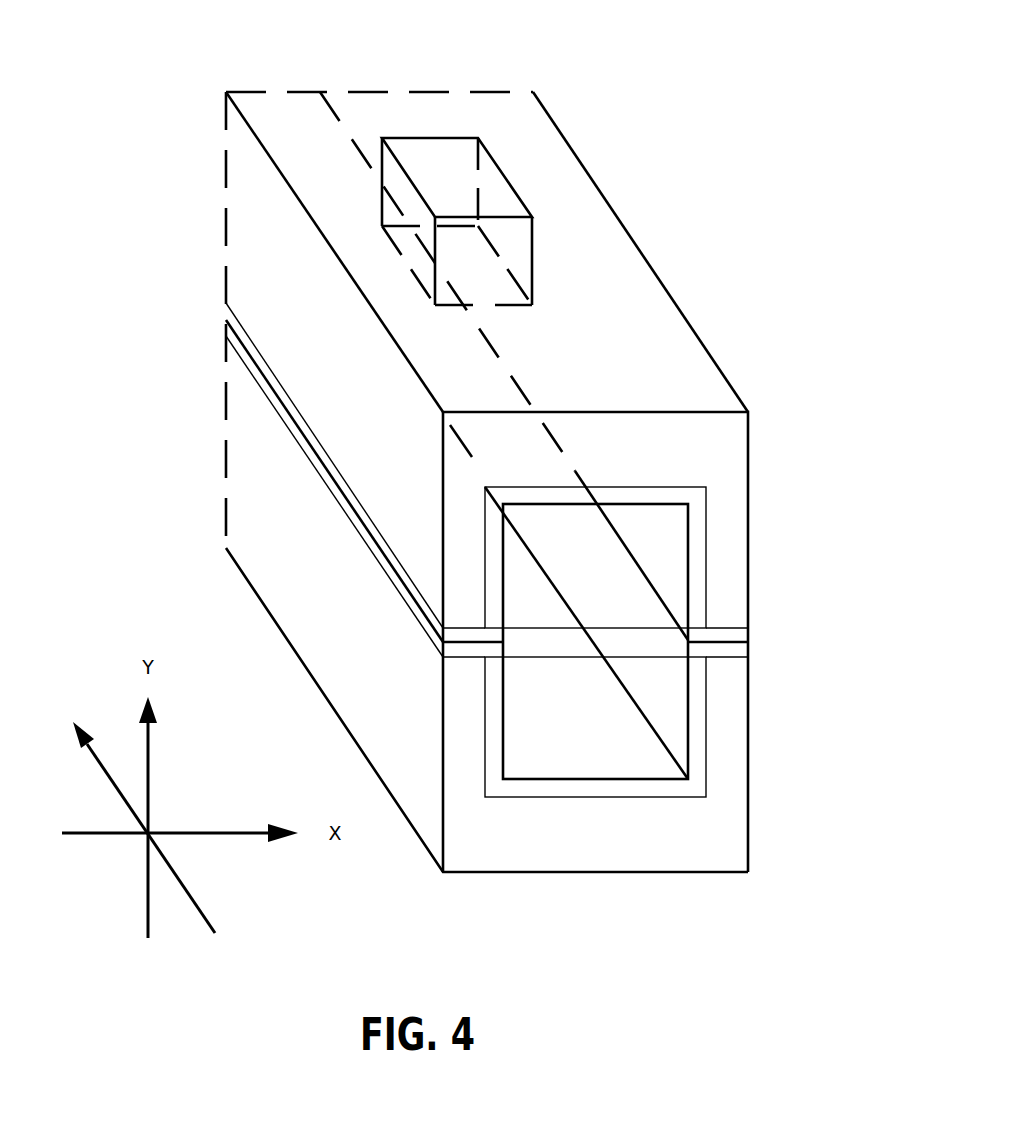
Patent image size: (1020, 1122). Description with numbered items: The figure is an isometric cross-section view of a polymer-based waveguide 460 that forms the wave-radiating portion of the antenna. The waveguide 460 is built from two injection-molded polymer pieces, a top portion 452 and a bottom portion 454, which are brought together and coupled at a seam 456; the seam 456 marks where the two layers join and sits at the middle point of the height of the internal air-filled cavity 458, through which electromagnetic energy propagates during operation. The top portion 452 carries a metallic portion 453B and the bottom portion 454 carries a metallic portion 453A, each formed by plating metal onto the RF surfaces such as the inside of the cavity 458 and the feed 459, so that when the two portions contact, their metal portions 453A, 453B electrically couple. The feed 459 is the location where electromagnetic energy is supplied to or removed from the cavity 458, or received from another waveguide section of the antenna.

The polymer-based waveguide 460 is at (305, 118).
The feed 459 is at (465, 147).
The top portion 452 is at (750, 473).
The metallic portion of the top portion 453B is at (690, 560).
The seam 456 is at (750, 640).
The air-filled cavity 458 is at (672, 727).
The metallic portion of the bottom portion 453A is at (688, 789).
The bottom portion 454 is at (602, 872).